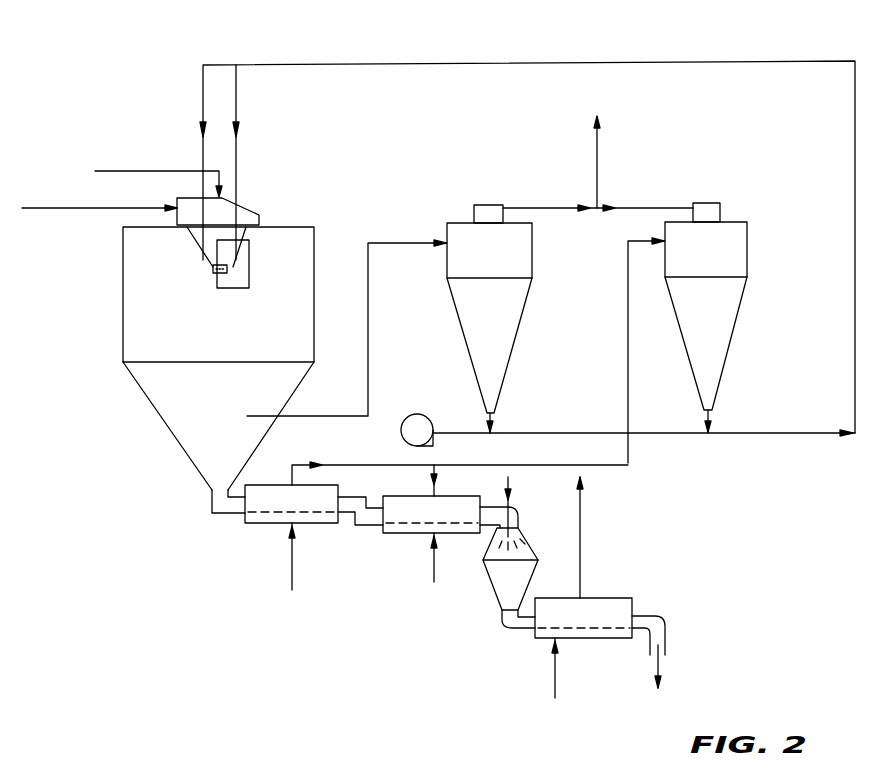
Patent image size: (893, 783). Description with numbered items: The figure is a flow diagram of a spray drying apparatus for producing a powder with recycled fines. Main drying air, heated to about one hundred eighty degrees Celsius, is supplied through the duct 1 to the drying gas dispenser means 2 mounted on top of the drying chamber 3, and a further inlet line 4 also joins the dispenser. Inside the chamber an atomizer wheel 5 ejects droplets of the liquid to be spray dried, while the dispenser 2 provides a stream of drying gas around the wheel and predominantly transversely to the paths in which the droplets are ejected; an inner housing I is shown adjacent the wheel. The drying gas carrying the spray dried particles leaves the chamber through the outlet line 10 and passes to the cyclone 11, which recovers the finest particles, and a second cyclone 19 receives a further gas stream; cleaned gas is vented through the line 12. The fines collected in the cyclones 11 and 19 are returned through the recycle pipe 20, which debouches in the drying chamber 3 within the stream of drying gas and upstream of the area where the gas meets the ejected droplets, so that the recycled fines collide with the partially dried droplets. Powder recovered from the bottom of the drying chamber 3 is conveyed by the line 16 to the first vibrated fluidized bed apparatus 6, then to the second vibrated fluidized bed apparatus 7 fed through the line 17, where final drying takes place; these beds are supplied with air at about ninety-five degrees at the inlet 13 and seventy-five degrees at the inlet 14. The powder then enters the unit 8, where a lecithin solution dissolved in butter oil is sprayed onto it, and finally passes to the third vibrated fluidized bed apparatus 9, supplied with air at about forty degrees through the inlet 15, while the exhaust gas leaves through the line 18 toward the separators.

The duct 1 is at (60, 208).
The drying gas dispenser means 2 is at (254, 184).
The drying chamber 3 is at (123, 311).
The secondary inlet line 4 is at (127, 171).
The atomizer wheel 5 is at (213, 270).
The inner chamber I is at (250, 253).
The vibrated fluidized bed apparatus 6 is at (245, 526).
The vibrated fluidized bed apparatus 7 is at (385, 535).
The unit 8 is at (488, 578).
The vibrated fluidized bed apparatus 9 is at (608, 640).
The gas outlet line to cyclone 10 is at (300, 415).
The cyclone 11 is at (510, 338).
The gas vent line 12 is at (598, 150).
The air supply 13 is at (291, 573).
The air supply 14 is at (434, 570).
The air supply 15 is at (553, 668).
The solids return line 16 is at (292, 468).
The solids feed line to conveyor 17 is at (438, 480).
The vapor outlet line 18 is at (586, 492).
The cyclone 19 is at (728, 320).
The pipe 20 is at (578, 63).